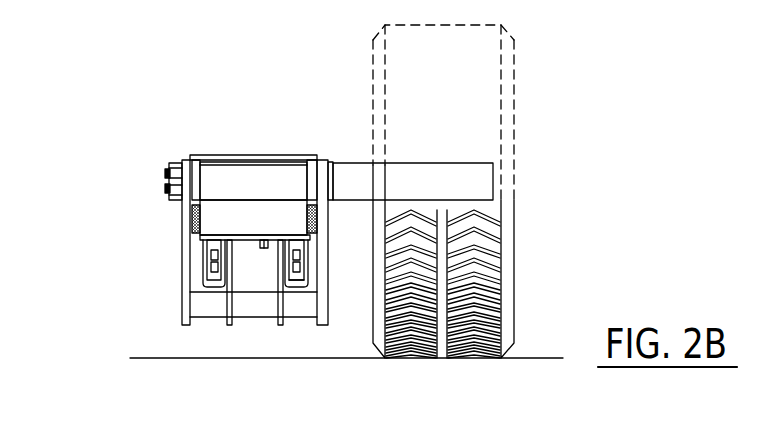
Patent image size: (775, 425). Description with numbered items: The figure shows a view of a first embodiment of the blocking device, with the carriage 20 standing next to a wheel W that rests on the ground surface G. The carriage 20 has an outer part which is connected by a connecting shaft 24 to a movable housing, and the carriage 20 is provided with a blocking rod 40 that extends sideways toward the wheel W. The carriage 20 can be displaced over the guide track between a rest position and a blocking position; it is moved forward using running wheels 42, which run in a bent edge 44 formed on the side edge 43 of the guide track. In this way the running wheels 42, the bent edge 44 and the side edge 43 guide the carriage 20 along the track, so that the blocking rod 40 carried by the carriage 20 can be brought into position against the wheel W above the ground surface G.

The carriage 20 is at (143, 208).
The connecting shaft 24 is at (202, 305).
The blocking rod 40 is at (357, 175).
The running wheels 42 is at (213, 273).
The side edge 43 is at (306, 277).
The bent edge 44 is at (297, 288).
The wheel W is at (480, 68).
The ground G is at (542, 358).